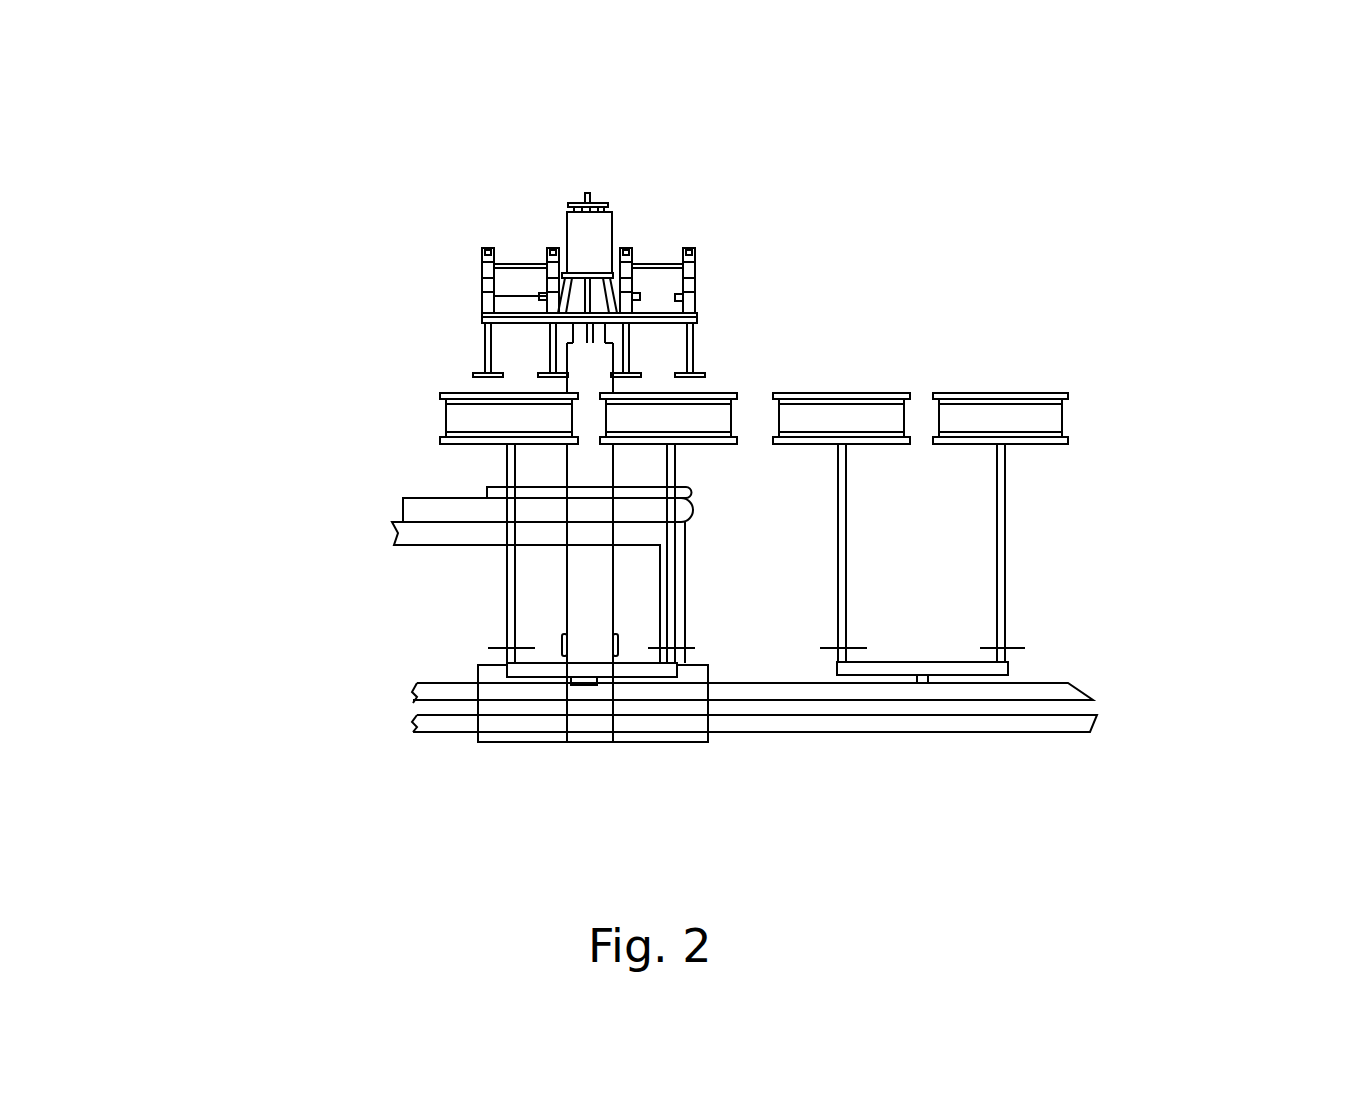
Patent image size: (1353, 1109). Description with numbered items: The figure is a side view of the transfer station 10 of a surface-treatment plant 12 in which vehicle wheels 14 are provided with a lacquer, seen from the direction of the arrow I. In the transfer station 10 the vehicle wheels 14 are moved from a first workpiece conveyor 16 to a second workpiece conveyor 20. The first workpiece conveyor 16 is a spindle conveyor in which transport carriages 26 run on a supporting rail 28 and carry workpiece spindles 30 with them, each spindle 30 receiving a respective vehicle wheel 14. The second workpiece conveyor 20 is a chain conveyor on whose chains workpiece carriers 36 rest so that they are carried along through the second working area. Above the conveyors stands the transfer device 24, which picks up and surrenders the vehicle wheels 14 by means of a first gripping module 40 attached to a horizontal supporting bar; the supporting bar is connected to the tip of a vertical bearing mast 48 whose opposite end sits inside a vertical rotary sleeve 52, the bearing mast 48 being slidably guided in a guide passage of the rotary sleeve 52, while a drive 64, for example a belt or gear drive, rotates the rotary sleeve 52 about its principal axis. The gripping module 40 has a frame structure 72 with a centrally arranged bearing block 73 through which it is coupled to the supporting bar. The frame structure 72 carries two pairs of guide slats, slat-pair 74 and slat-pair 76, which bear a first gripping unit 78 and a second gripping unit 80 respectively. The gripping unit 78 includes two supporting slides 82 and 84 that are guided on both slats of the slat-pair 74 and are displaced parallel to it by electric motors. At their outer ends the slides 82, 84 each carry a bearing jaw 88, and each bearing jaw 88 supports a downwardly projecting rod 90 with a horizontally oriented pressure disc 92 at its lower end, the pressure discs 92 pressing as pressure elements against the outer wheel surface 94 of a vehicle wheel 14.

The transfer station 10 is at (1060, 165).
The surface-treatment plant 12 is at (210, 181).
The vehicle wheel 14 is at (446, 393).
The first workpiece conveyor 16 is at (1090, 692).
The second workpiece conveyor 20 is at (410, 510).
The transfer device 24 is at (795, 156).
The transport carriage 26 is at (937, 658).
The supporting rail 28 is at (1090, 725).
The workpiece spindle 30 is at (672, 545).
The workpiece carrier 36 is at (694, 492).
The first gripping module 40 is at (700, 275).
The bearing mast 48 is at (587, 330).
The rotary sleeve 52 is at (607, 603).
The drive 64 is at (620, 643).
The frame structure 72 is at (670, 332).
The bearing block 73 is at (597, 235).
The slat-pair 74 is at (664, 280).
The slat-pair 76 is at (522, 280).
The first gripping unit 78 is at (694, 235).
The second gripping unit 80 is at (541, 246).
The supporting slide 82 is at (513, 297).
The supporting slide 84 is at (672, 298).
The bearing jaw 88 is at (483, 247).
The rod 90 is at (692, 352).
The pressure disc 92 is at (703, 377).
The outer wheel surface 94 is at (443, 417).
The direction arrow I is at (1147, 540).